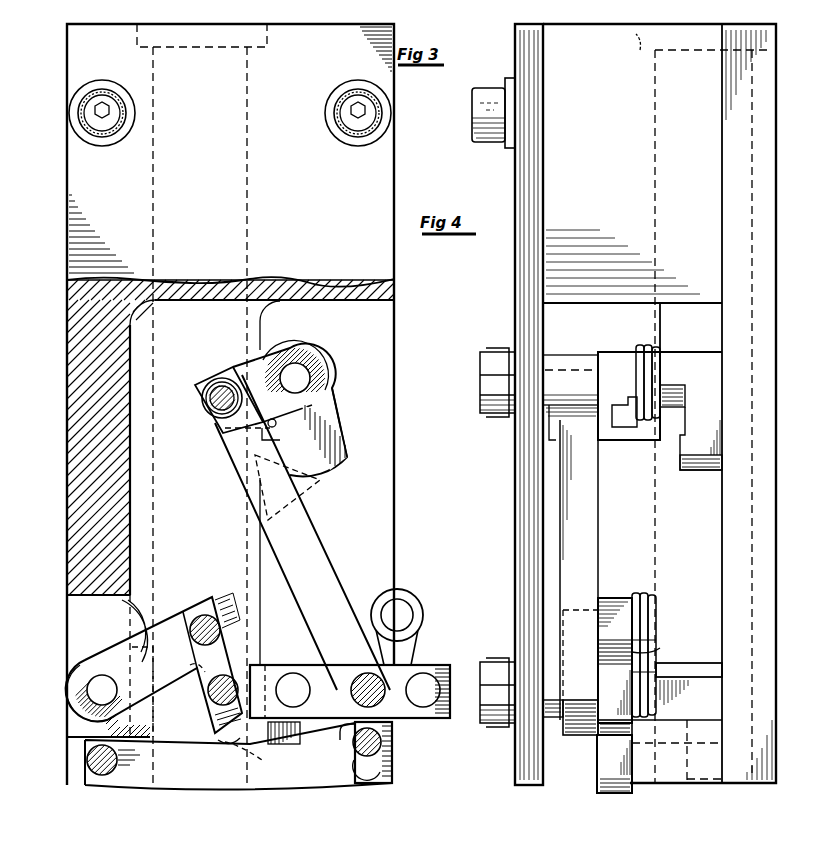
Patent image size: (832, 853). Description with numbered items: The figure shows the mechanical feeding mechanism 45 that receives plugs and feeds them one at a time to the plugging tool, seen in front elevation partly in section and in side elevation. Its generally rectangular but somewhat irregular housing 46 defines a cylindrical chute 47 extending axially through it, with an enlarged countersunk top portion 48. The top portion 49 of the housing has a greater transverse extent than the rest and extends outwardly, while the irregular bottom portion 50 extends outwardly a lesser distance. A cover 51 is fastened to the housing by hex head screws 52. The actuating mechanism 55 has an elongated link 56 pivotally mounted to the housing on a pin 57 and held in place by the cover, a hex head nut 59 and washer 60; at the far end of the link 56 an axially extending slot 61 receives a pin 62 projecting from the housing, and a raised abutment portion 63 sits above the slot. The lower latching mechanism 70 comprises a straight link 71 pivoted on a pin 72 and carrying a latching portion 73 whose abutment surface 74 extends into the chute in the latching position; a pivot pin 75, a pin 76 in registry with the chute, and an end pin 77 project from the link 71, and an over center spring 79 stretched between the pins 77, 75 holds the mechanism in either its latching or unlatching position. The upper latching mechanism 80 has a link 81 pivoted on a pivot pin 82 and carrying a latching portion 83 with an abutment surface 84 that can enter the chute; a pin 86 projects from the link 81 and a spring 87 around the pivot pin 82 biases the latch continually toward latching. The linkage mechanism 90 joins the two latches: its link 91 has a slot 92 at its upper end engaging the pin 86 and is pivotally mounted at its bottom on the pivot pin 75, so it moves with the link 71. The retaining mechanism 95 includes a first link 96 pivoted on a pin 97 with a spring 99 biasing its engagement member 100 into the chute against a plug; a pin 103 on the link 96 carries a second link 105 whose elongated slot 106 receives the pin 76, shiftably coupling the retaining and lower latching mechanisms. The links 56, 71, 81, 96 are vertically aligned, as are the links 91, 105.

In FIG. 3, the mechanical feeding mechanism 45 is at (398, 188).
In FIG. 4, the mechanical feeding mechanism 45 is at (510, 59).
In FIG. 3, the housing 46 is at (70, 350).
In FIG. 4, the housing 46 is at (600, 530).
In FIG. 3, the chute 47 is at (247, 86).
In FIG. 4, the chute 47 is at (655, 100).
In FIG. 3, the countersunk top portion 48 is at (262, 40).
In FIG. 4, the countersunk top portion 48 is at (640, 45).
In FIG. 3, the top portion 49 is at (396, 284).
In FIG. 4, the top portion 49 is at (594, 308).
In FIG. 4, the bottom portion 50 is at (742, 786).
In FIG. 4, the cover 51 is at (512, 256).
In FIG. 3, the hex head screws 52 is at (108, 125).
In FIG. 4, the hex head screws 52 is at (486, 142).
In FIG. 3, the actuating mechanism 55 is at (222, 800).
In FIG. 3, the link 56 is at (185, 790).
In FIG. 4, the link 56 is at (598, 768).
In FIG. 3, the pin 57 is at (102, 776).
In FIG. 3, the hex head nut 59 is at (132, 850).
In FIG. 4, the hex head nut 59 is at (478, 720).
In FIG. 4, the washer 60 is at (508, 726).
In FIG. 3, the slot 61 is at (388, 768).
In FIG. 3, the pin 62 is at (383, 742).
In FIG. 3, the raised abutment portion 63 is at (344, 740).
In FIG. 4, the raised abutment portion 63 is at (600, 736).
In FIG. 3, the lower latching mechanism 70 is at (318, 660).
In FIG. 4, the lower latching mechanism 70 is at (689, 684).
In FIG. 3, the straight link 71 is at (305, 738).
In FIG. 4, the straight link 71 is at (650, 652).
In FIG. 3, the pin 72 is at (290, 673).
In FIG. 3, the latching portion 73 is at (320, 785).
In FIG. 3, the abutment surface 74 is at (222, 748).
In FIG. 3, the pivot pin 75 is at (362, 672).
In FIG. 3, the pin 76 is at (213, 712).
In FIG. 3, the pin 77 is at (430, 673).
In FIG. 3, the over center spring 79 is at (400, 598).
In FIG. 4, the over center spring 79 is at (655, 605).
In FIG. 3, the upper latching mechanism 80 is at (334, 391).
In FIG. 4, the upper latching mechanism 80 is at (700, 345).
In FIG. 3, the link 81 is at (240, 370).
In FIG. 4, the link 81 is at (614, 352).
In FIG. 3, the pivot pin 82 is at (296, 363).
In FIG. 3, the latching portion 83 is at (335, 417).
In FIG. 4, the latching portion 83 is at (691, 427).
In FIG. 3, the abutment surface 84 is at (280, 442).
In FIG. 3, the pin 86 is at (207, 398).
In FIG. 4, the pin 86 is at (497, 382).
In FIG. 3, the spring 87 is at (320, 348).
In FIG. 4, the spring 87 is at (633, 430).
In FIG. 3, the linkage mechanism 90 is at (308, 515).
In FIG. 4, the linkage mechanism 90 is at (552, 456).
In FIG. 3, the link 91 is at (320, 548).
In FIG. 4, the link 91 is at (565, 494).
In FIG. 3, the slot 92 is at (223, 432).
In FIG. 3, the retaining mechanism 95 is at (124, 640).
In FIG. 3, the first link 96 is at (180, 612).
In FIG. 4, the first link 96 is at (620, 596).
In FIG. 3, the pin 97 is at (75, 700).
In FIG. 3, the spring 99 is at (100, 672).
In FIG. 3, the engagement member 100 is at (153, 710).
In FIG. 3, the pin 103 is at (204, 612).
In FIG. 3, the second link 105 is at (198, 675).
In FIG. 4, the second link 105 is at (578, 608).
In FIG. 3, the elongated slot 106 is at (222, 742).